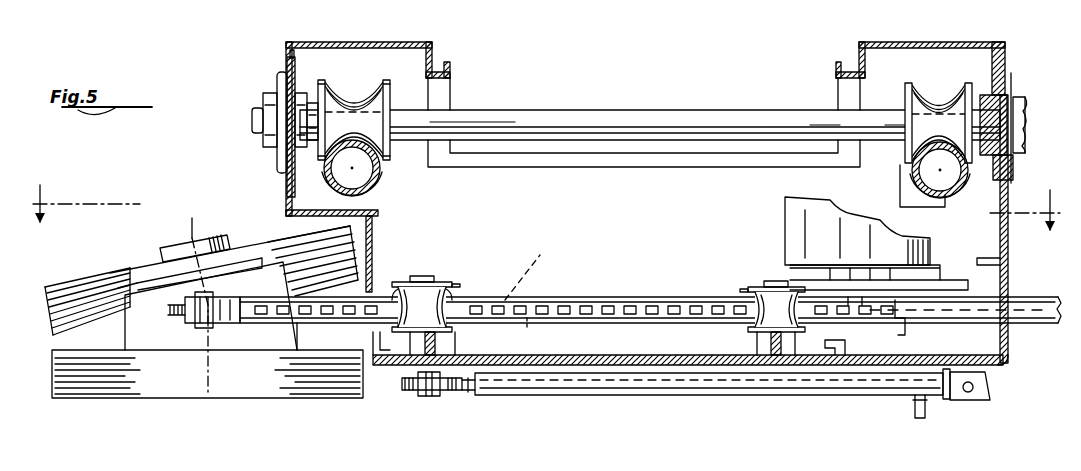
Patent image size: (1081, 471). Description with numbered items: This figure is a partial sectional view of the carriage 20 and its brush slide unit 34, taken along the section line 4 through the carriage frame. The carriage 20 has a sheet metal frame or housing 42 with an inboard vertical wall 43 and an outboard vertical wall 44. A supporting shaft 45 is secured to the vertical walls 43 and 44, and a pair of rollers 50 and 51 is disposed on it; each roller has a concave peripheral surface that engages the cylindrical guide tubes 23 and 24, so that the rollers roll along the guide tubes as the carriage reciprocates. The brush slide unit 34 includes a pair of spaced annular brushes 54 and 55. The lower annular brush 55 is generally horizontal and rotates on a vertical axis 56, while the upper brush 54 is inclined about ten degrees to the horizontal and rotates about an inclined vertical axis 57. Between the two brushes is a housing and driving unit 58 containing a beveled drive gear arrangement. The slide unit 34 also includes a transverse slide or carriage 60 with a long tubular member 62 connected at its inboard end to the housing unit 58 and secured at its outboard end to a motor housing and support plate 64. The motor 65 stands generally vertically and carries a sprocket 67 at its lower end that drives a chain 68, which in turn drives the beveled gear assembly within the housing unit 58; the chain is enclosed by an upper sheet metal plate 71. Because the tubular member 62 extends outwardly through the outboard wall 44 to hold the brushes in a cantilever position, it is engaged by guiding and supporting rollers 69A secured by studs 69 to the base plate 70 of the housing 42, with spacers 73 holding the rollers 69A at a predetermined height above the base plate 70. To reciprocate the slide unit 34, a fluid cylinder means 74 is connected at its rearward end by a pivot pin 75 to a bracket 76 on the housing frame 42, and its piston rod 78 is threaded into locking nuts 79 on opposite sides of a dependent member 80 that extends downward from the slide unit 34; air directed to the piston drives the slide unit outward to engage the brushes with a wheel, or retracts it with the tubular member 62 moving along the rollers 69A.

The carriage 20 is at (1025, 172).
The cylindrical guide tube 23 is at (925, 175).
The cylindrical guide tube 24 is at (385, 176).
The brush slide unit 34 is at (85, 272).
The section line 4- 4 is at (546, 207).
The sheet metal frame or housing 42 is at (432, 56).
The inboard vertical wall 43 is at (300, 60).
The outboard vertical wall 44 is at (1010, 244).
The supporting shaft 45 is at (665, 115).
The roller 50 is at (345, 92).
The roller 51 is at (918, 96).
The upper annular brush 54 is at (272, 240).
The lower annular brush 55 is at (258, 378).
The vertical axis 56 is at (205, 388).
The inclined vertical axis 57 is at (192, 236).
The housing and driving unit 58 is at (148, 330).
The transverse slide or carriage 60 is at (306, 3).
The tubular member 62 is at (598, 298).
The motor housing and support plate 64 is at (932, 285).
The motor 65 is at (795, 213).
The sprocket 67 is at (902, 322).
The chain 68 is at (529, 268).
The stud 69 is at (422, 282).
The guiding and supporting roller 69A is at (455, 286).
The base plate 70 is at (618, 354).
The upper sheet metal plate 71 is at (528, 326).
The spacer 73 is at (440, 340).
The fluid cylinder means 74 is at (718, 396).
The pivot pin 75 is at (972, 392).
The bracket 76 is at (988, 382).
The piston rod 78 is at (470, 394).
The locking nut 79 is at (410, 392).
The dependent member 80 is at (426, 398).